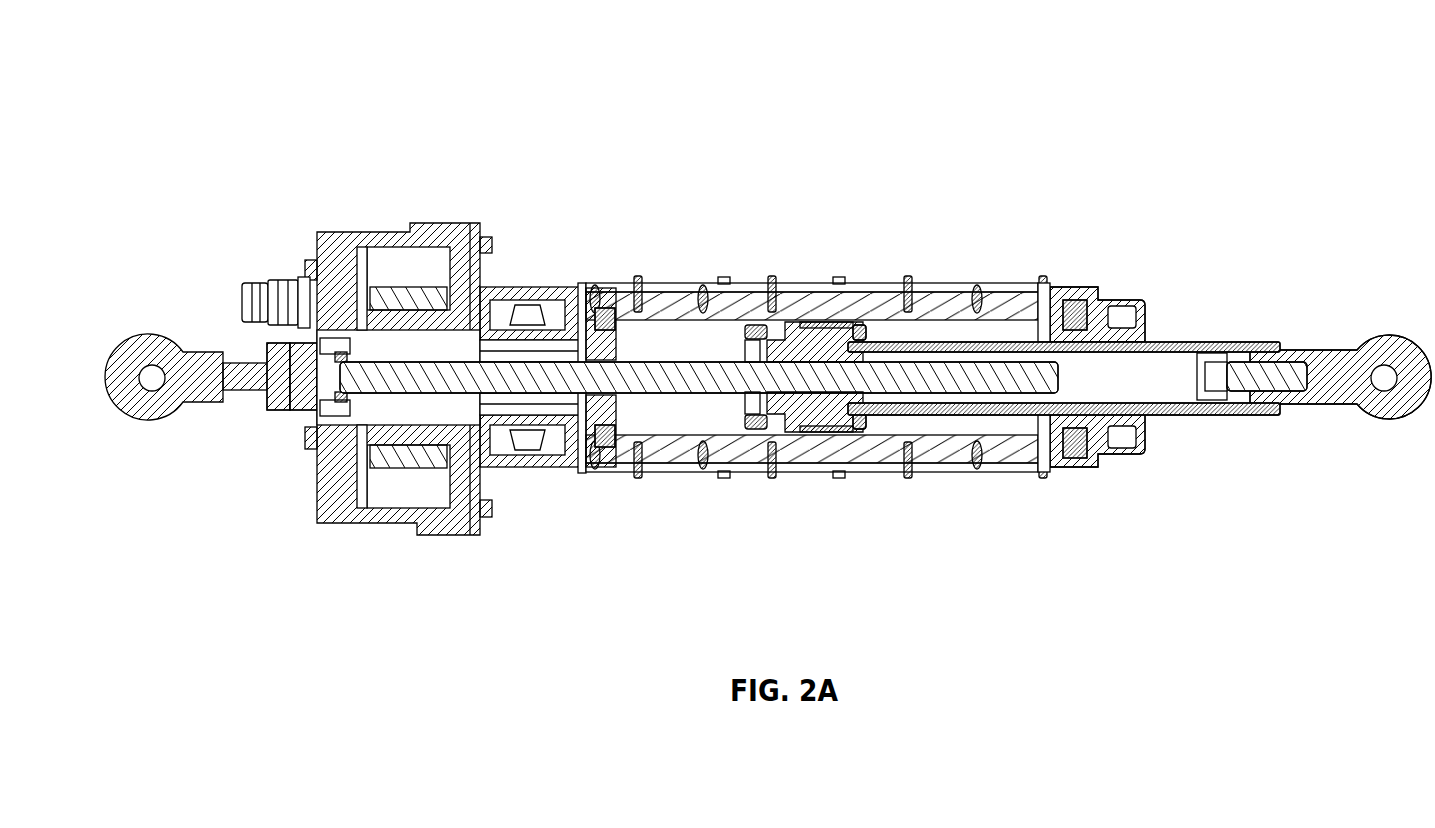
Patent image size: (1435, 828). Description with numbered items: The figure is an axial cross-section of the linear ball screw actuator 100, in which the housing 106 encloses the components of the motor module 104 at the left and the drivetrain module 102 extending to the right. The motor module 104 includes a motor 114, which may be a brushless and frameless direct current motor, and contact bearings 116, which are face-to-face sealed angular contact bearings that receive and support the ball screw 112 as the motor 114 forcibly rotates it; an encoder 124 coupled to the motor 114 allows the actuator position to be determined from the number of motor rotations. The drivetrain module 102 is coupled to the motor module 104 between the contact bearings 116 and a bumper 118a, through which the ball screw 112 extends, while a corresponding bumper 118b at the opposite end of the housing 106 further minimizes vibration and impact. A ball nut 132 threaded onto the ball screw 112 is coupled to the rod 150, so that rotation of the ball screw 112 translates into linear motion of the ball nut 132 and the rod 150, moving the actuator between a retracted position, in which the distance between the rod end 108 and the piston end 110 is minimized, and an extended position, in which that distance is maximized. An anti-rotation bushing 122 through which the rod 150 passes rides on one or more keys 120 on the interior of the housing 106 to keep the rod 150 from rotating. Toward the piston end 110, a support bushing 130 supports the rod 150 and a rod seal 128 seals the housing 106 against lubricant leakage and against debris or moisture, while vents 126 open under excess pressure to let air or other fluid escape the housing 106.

The linear ball screw actuator 100 is at (238, 74).
The drivetrain module 102 is at (757, 336).
The motor module 104 is at (367, 353).
The housing 106 is at (1010, 283).
The rod end 108 is at (146, 340).
The piston end 110 is at (1352, 418).
The ball screw 112 is at (693, 370).
The motor 114 is at (413, 270).
The contact bearings 116 is at (525, 450).
The bumper 118a is at (605, 413).
The bumper 118b is at (1076, 465).
The splines (or keys) 120 is at (950, 300).
The anti-rotation bushing 122 is at (822, 295).
The encoder 124 is at (318, 395).
The vents 126 is at (632, 278).
The rod seal 128 is at (1120, 320).
The support bushing 130 is at (1090, 290).
The ball nut 132 is at (755, 425).
The rod 150 is at (1175, 416).